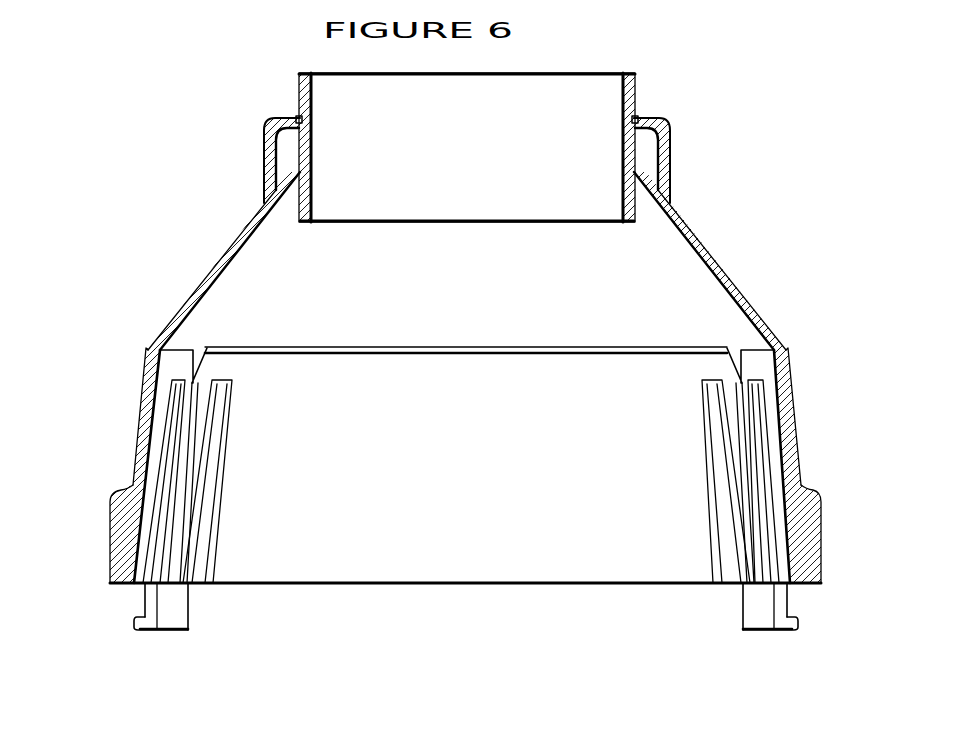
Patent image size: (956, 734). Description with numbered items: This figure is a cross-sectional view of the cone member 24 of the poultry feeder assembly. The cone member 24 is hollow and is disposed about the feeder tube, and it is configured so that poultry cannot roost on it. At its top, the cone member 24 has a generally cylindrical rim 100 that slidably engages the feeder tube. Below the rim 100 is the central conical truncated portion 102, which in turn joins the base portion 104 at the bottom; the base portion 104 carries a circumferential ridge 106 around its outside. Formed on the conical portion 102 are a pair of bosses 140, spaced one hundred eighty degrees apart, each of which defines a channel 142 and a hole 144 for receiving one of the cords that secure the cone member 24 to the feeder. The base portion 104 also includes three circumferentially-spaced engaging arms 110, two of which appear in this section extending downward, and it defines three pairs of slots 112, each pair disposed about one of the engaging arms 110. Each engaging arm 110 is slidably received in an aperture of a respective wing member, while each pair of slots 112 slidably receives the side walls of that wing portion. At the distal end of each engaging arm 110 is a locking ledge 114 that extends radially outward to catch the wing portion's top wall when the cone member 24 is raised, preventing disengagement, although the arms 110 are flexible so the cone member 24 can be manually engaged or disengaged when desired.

The cone member 24 is at (208, 232).
The rim 100 is at (637, 72).
The conical truncated portion 102 is at (742, 272).
The base portion 104 is at (790, 392).
The circumferential ridge 106 is at (110, 520).
The engaging arm 110 is at (180, 598).
The slot 112 is at (176, 410).
The locking ledge 114 is at (140, 631).
The boss 140 is at (265, 140).
The channel 142 is at (280, 162).
The hole 144 is at (292, 122).